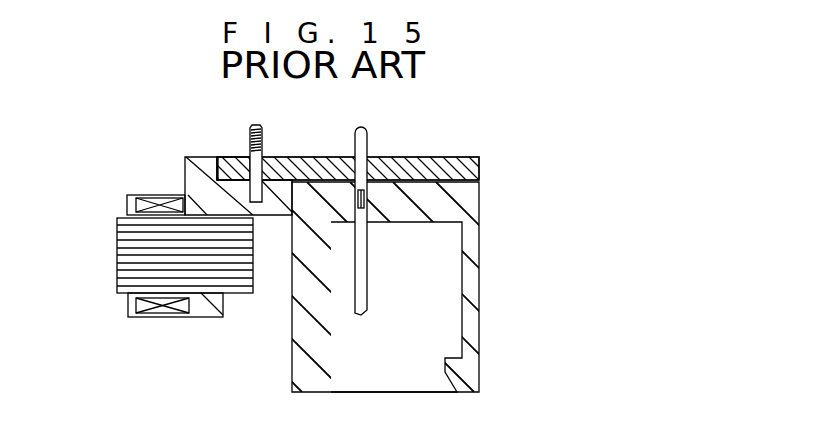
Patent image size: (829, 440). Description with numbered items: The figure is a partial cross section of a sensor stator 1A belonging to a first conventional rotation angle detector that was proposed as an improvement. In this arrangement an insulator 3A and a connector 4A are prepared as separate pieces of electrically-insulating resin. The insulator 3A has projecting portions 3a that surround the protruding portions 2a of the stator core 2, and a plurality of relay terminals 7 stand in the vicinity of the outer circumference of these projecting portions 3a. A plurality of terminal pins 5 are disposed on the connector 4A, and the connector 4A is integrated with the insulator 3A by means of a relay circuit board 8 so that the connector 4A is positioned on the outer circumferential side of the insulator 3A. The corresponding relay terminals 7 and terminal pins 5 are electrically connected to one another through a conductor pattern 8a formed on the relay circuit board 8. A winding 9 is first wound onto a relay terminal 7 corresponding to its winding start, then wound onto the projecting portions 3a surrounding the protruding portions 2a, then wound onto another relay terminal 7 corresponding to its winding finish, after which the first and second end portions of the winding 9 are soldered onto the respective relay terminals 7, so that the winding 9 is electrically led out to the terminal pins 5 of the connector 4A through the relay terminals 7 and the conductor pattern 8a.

The sensor stator 1A is at (105, 128).
The stator 2 is at (110, 280).
The protruding portions 2a is at (135, 250).
The projecting portions 3a is at (132, 211).
The insulator 3A is at (191, 175).
The connector 4A is at (483, 204).
The terminal pins 5 is at (366, 131).
The relay terminals 7 is at (257, 124).
The relay circuit board 8 is at (438, 153).
The conductor pattern 8a is at (311, 155).
The winding 9 is at (222, 154).